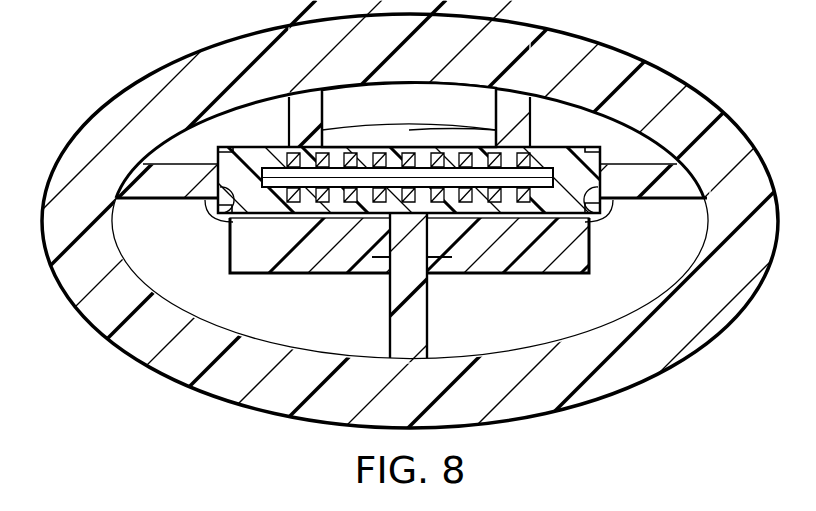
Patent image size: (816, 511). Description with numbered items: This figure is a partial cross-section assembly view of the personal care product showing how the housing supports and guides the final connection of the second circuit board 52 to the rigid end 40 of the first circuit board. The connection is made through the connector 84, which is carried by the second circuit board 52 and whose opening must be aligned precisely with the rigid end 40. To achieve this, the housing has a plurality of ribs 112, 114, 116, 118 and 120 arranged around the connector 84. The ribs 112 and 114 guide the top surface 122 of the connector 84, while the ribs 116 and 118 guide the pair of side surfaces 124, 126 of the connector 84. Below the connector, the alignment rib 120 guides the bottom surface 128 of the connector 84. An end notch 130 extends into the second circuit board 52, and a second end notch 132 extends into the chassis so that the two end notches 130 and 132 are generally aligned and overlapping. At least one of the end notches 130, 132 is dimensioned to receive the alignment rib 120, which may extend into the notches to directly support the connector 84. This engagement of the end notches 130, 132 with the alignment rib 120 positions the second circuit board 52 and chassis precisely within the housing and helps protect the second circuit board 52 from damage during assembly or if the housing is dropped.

The rigid end 40 is at (283, 167).
The second circuit board 52 is at (294, 276).
The connector 84 is at (607, 140).
The rib 112 is at (312, 117).
The rib 114 is at (512, 117).
The rib 116 is at (163, 200).
The rib 118 is at (668, 200).
The alignment rib 120 is at (416, 323).
The top surface 122 is at (405, 153).
The side surface 124 is at (213, 220).
The side surface 126 is at (599, 220).
The bottom surface 128 is at (439, 218).
The end notch 130 is at (382, 252).
The end notch 132 is at (366, 299).